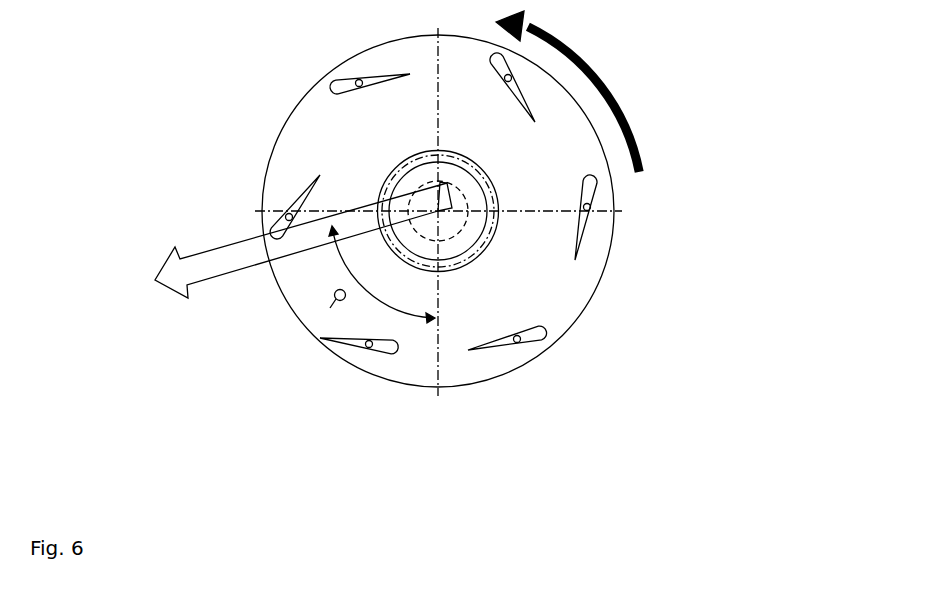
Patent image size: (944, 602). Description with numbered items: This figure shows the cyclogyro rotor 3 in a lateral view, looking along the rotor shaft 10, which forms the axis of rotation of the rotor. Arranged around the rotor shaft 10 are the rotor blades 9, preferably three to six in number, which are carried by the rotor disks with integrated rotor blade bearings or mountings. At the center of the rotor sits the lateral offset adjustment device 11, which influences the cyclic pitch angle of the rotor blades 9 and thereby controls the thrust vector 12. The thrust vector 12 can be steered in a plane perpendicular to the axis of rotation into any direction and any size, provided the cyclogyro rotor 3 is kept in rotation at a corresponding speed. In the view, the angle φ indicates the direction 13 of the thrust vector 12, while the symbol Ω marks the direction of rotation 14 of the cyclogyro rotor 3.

The cyclogyro rotor 3 is at (565, 290).
The rotor blades 9 is at (593, 193).
The rotor shaft 10 is at (438, 211).
The lateral offset adjustment device 11 is at (410, 238).
The thrust vector 12 is at (233, 257).
The direction of the thrust vector 13 is at (330, 308).
The direction of rotation 14 is at (612, 80).